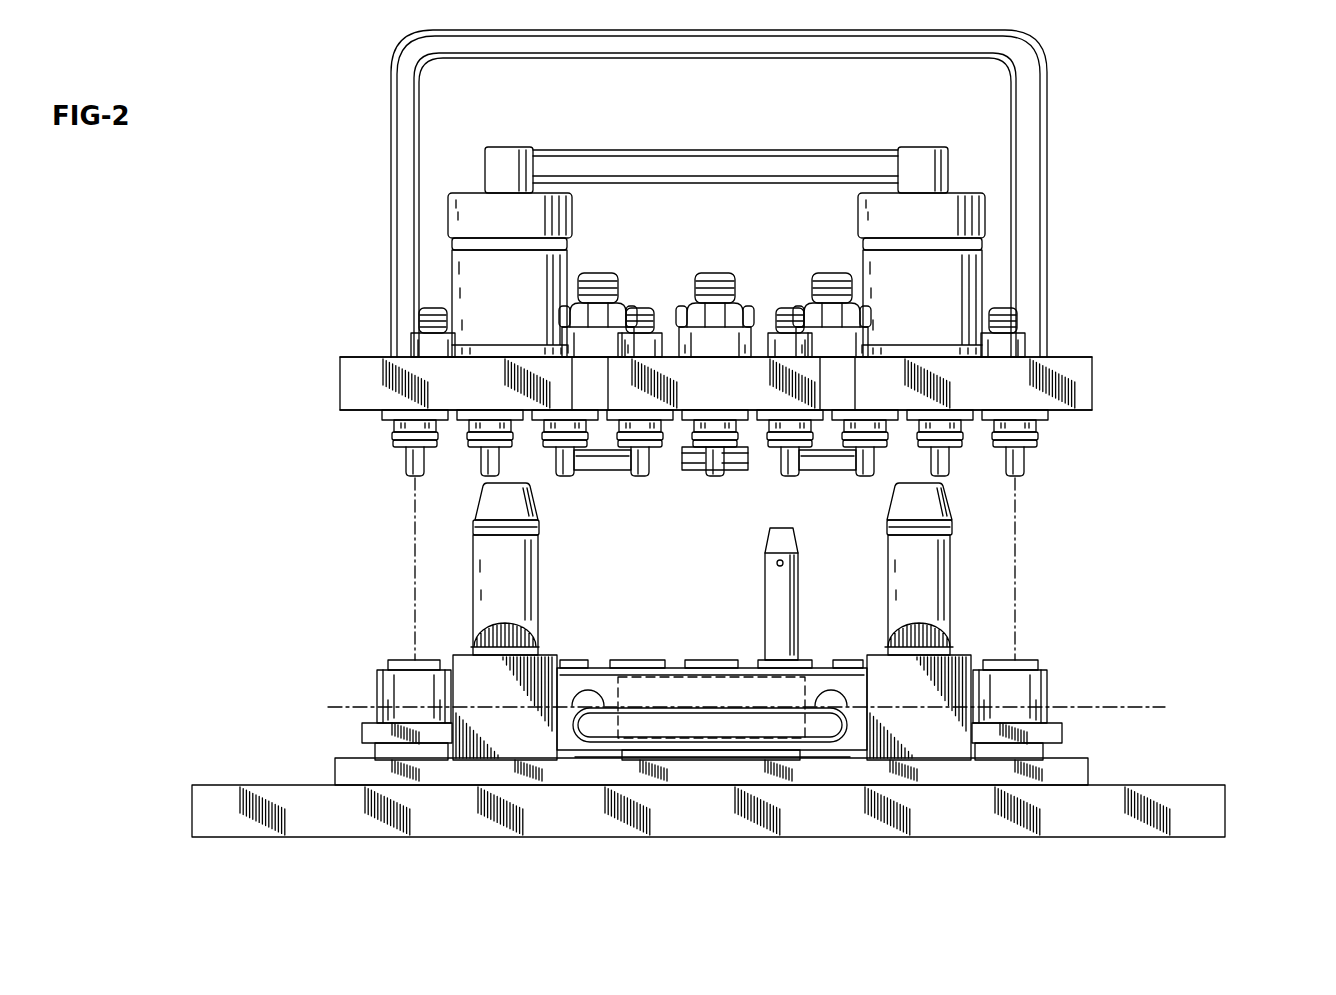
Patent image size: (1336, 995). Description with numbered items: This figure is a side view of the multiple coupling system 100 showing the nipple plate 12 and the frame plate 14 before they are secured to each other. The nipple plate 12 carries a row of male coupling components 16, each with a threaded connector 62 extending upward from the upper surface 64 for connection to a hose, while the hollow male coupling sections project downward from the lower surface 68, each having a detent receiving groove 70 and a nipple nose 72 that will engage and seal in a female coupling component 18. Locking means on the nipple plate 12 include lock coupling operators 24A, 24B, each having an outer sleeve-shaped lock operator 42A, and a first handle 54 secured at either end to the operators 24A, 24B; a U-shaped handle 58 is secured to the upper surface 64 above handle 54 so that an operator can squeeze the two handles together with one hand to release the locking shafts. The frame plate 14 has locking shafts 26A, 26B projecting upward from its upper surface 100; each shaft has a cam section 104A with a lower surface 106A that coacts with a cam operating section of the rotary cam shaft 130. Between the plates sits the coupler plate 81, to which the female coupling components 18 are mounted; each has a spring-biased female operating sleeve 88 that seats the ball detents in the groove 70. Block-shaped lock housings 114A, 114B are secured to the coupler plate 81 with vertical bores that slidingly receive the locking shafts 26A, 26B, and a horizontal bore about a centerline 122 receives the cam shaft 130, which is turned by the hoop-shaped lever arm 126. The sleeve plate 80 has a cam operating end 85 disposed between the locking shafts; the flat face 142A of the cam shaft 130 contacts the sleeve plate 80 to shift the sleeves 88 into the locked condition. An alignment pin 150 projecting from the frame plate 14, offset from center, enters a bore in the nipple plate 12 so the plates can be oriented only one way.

The nipple plate 12 is at (1070, 383).
The frame plate 14 is at (1222, 815).
The male coupling components 16 is at (948, 450).
The female coupling components 18 is at (575, 660).
The lock coupling operator 24A is at (470, 272).
The lock coupling operator 24B is at (958, 278).
The locking shaft 26A is at (468, 567).
The locking shaft 26B is at (960, 582).
The lock operator 42A is at (498, 312).
The first handle 54 is at (713, 165).
The third U-shaped handle 58 is at (404, 68).
The threaded connector 62 is at (786, 330).
The upper surface 64 is at (1078, 357).
The lower surface 68 is at (1080, 410).
The detent receiving groove 70 is at (1035, 440).
The nipple nose 72 is at (638, 470).
The sleeve plate 80 is at (1055, 733).
The coupler plate 81 is at (1087, 775).
The cam operating end 85 is at (778, 752).
The female operating sleeve 88 is at (1035, 690).
The upper surface 100 is at (238, 785).
The cam section 104A is at (468, 646).
The lower surface 106A is at (525, 590).
The lock housing 114A is at (493, 735).
The lock housing 114B is at (918, 735).
The centerline 122 is at (1160, 705).
The lever arm 126 is at (585, 730).
The cam operating shaft 130 is at (830, 680).
The flat face 142A is at (683, 690).
The alignment pin 150 is at (775, 582).